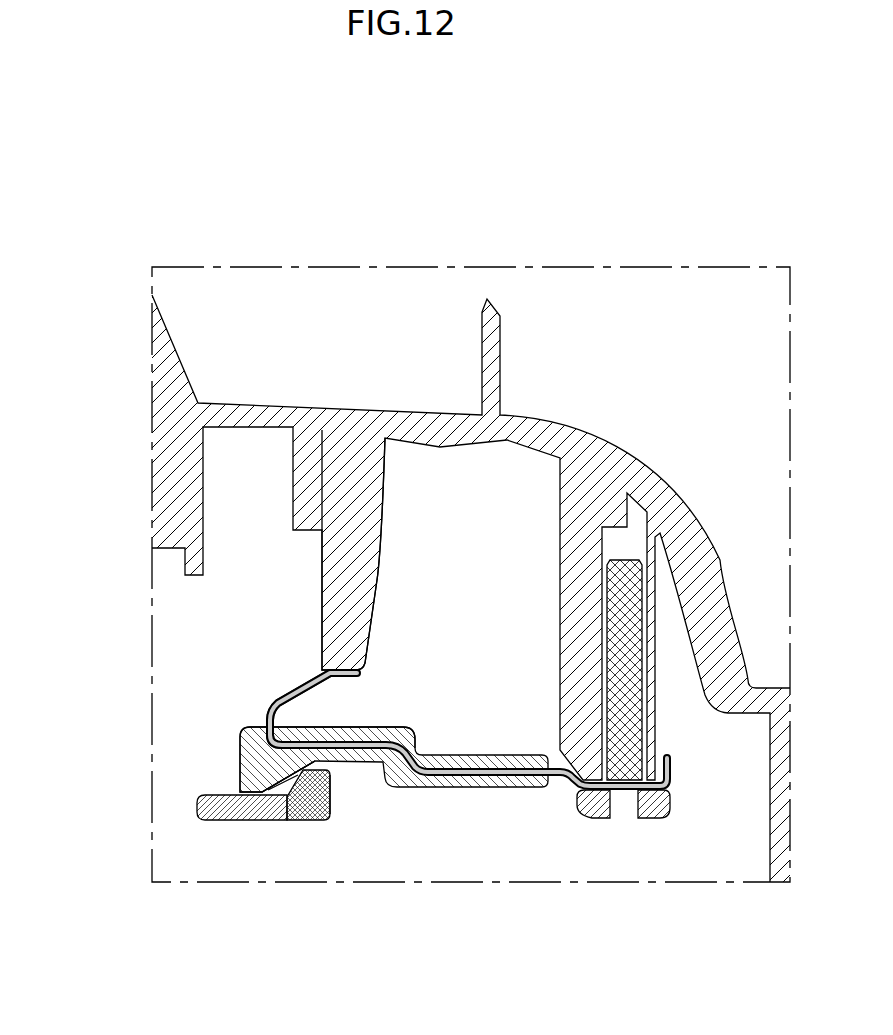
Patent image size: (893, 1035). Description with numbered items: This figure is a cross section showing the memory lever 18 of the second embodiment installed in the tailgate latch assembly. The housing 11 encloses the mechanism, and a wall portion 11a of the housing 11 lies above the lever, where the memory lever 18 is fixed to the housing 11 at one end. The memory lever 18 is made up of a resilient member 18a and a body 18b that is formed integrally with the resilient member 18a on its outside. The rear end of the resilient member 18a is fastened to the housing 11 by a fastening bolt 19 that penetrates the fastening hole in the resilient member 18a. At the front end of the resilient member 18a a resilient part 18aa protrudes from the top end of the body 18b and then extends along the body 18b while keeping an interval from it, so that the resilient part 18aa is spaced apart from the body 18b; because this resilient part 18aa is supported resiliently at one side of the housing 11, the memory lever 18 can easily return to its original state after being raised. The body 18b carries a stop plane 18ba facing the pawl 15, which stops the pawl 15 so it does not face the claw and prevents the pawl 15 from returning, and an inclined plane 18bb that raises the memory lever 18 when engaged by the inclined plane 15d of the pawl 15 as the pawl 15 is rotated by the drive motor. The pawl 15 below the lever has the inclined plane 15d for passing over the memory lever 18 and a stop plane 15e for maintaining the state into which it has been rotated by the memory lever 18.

The housing 11 is at (471, 588).
The housing wall portion 11a is at (350, 616).
The pawl 15 is at (218, 822).
The inclined plane 15d is at (290, 792).
The stop plane 15e is at (327, 790).
The memory lever 18 is at (348, 797).
The resilient member 18a is at (453, 773).
The resilient part 18aa is at (305, 687).
The body 18b is at (291, 817).
The stop plane 18ba is at (260, 792).
The inclined plane 18bb is at (240, 752).
The fastening bolt 19 is at (620, 770).